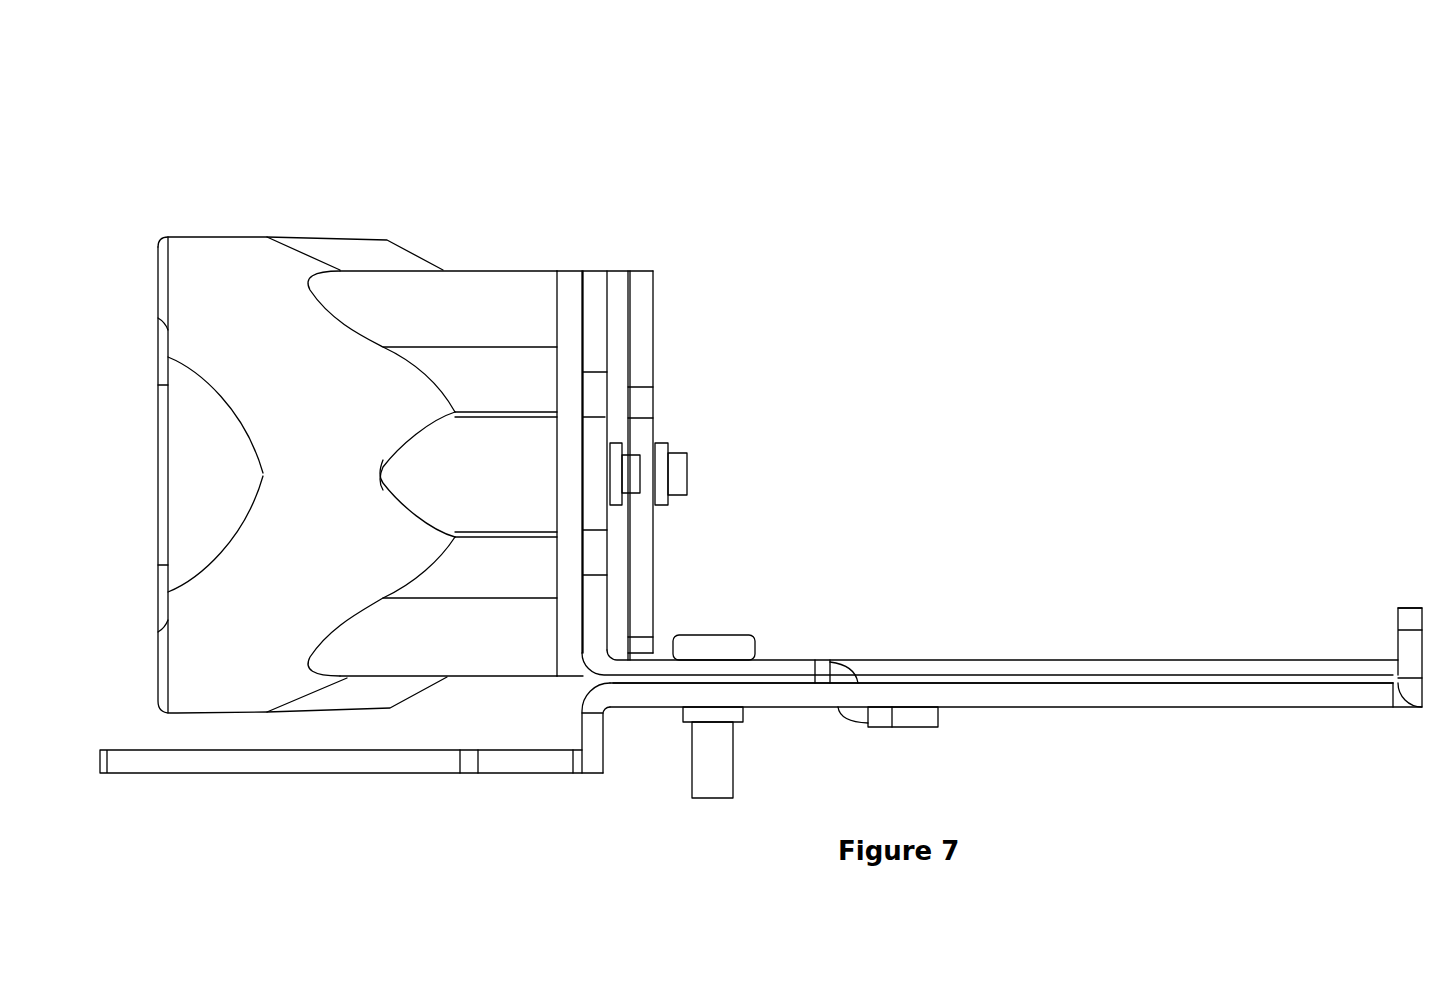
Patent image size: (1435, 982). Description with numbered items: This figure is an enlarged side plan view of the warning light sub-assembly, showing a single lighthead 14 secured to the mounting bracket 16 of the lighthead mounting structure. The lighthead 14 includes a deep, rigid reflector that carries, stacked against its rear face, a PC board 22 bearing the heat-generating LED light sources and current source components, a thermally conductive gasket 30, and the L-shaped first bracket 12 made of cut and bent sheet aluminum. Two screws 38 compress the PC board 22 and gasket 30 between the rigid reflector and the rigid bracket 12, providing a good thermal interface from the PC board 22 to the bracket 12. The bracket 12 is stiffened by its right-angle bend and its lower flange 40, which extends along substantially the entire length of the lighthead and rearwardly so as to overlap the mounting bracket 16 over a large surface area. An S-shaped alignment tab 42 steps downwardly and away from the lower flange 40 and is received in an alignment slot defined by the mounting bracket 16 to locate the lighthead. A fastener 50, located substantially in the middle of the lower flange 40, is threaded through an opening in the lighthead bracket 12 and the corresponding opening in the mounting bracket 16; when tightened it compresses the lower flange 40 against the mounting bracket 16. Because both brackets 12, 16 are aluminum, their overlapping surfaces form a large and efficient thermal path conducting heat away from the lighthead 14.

The lighthead 14 is at (313, 243).
The first bracket 12 is at (593, 280).
The PC board 22 is at (565, 280).
The thermally conductive gasket 30 is at (579, 277).
The screw 38 is at (630, 462).
The lower flange 40 is at (753, 672).
The fastener 50 is at (708, 638).
The alignment tab 42 is at (898, 713).
The second bracket 16 is at (1072, 695).